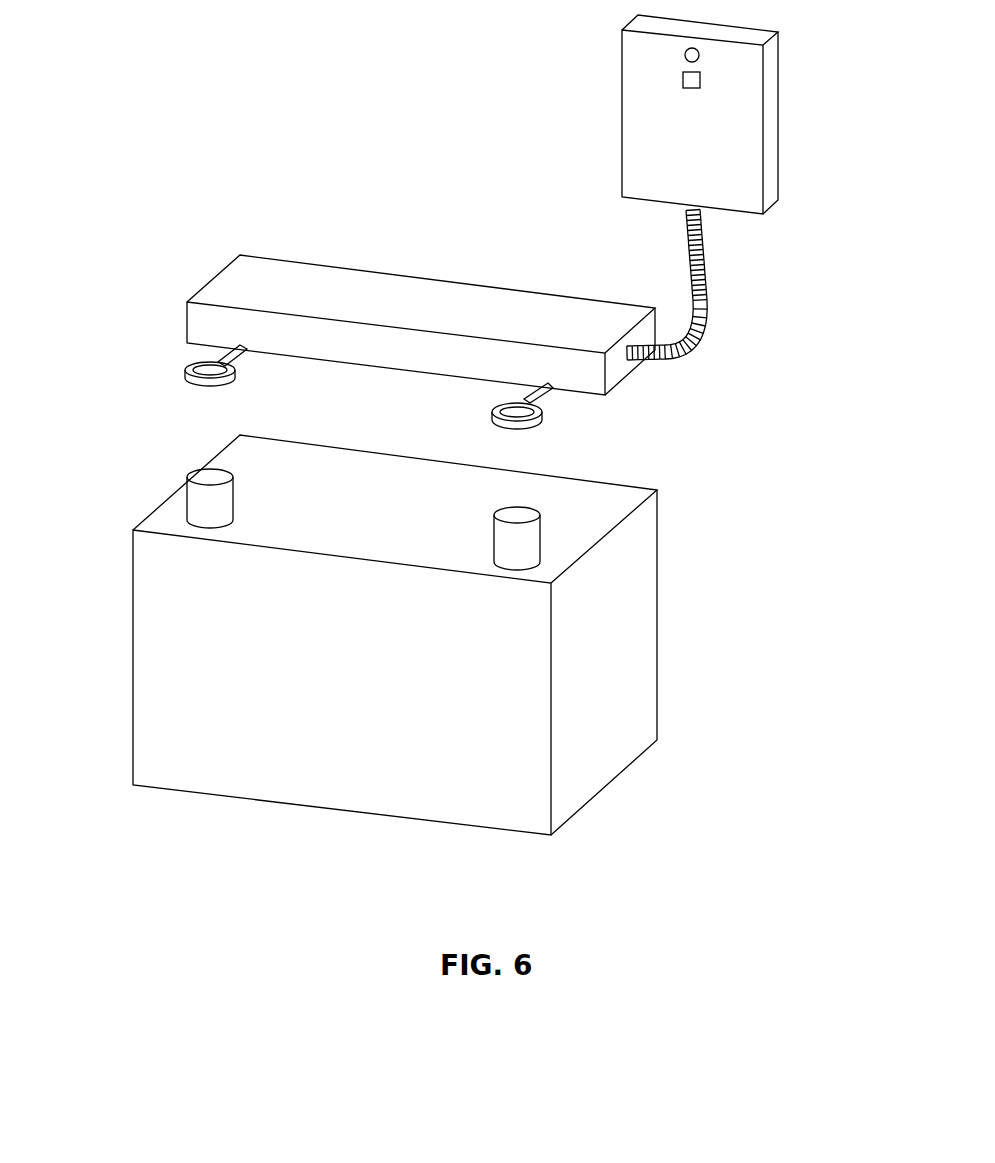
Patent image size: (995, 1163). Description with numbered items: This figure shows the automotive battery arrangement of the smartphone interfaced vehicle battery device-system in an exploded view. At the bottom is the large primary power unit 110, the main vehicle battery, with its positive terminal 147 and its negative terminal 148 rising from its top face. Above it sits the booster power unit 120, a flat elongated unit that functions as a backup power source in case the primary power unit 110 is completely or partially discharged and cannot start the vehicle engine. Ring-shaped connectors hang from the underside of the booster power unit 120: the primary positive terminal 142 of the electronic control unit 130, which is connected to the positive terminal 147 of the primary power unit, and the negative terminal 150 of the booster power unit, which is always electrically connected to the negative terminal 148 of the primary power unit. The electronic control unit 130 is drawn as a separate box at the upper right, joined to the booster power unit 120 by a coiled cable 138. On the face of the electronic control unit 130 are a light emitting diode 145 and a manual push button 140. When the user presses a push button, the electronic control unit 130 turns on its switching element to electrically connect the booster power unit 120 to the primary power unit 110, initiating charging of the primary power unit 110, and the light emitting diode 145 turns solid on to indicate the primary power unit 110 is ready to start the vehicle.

The primary power unit 110 is at (600, 752).
The booster power unit 120 is at (447, 308).
The electronic control unit 130 is at (655, 112).
The coiled cable 138 is at (715, 320).
The manual push button 140 is at (700, 88).
The primary positive terminal 142 is at (190, 364).
The light emitting diode 145 is at (700, 58).
The positive terminal of primary power unit 147 is at (197, 502).
The negative terminal of the primary power unit 148 is at (517, 540).
The negative terminal of the booster power unit 150 is at (540, 420).